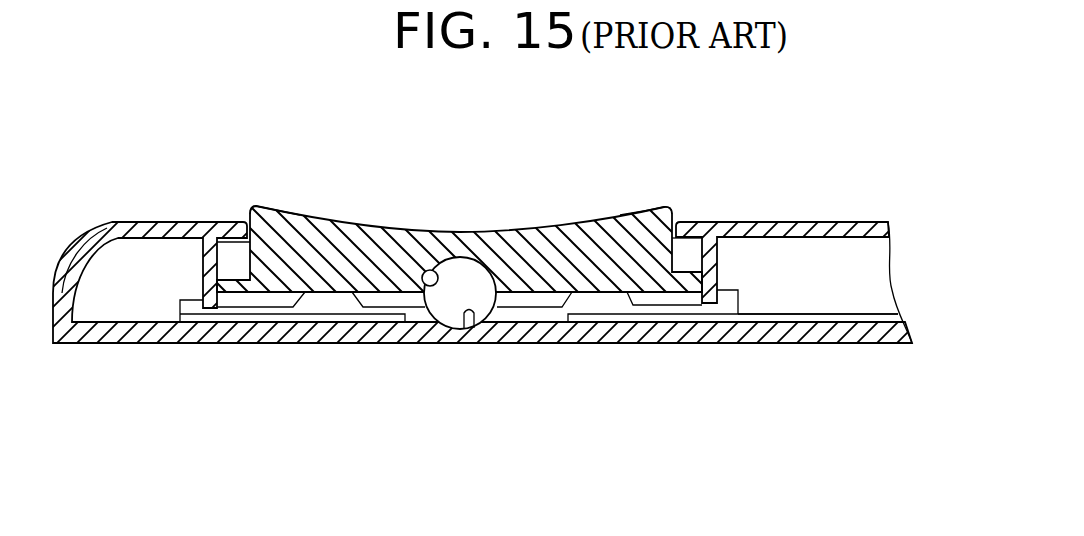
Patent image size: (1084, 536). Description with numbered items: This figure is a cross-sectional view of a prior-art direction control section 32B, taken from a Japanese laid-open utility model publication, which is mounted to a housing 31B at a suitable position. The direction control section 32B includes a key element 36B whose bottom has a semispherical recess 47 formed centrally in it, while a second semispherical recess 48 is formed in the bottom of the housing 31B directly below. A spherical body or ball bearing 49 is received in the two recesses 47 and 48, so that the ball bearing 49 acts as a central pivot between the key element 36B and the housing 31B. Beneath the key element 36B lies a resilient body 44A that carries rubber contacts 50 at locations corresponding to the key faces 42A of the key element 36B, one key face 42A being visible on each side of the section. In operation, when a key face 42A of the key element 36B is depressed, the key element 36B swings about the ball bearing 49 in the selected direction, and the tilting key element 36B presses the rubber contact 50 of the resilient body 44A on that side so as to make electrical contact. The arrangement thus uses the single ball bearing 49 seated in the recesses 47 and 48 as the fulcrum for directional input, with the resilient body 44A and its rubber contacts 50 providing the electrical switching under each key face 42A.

The housing 31B is at (854, 222).
The direction control section 32B is at (384, 198).
The key element 36B is at (686, 206).
The key face 42A is at (286, 220).
The resilient body 44A is at (726, 305).
The semispherical recess 47 is at (418, 294).
The semispherical recess 48 is at (480, 326).
The ball bearing 49 is at (452, 312).
The rubber contact 50 is at (316, 316).